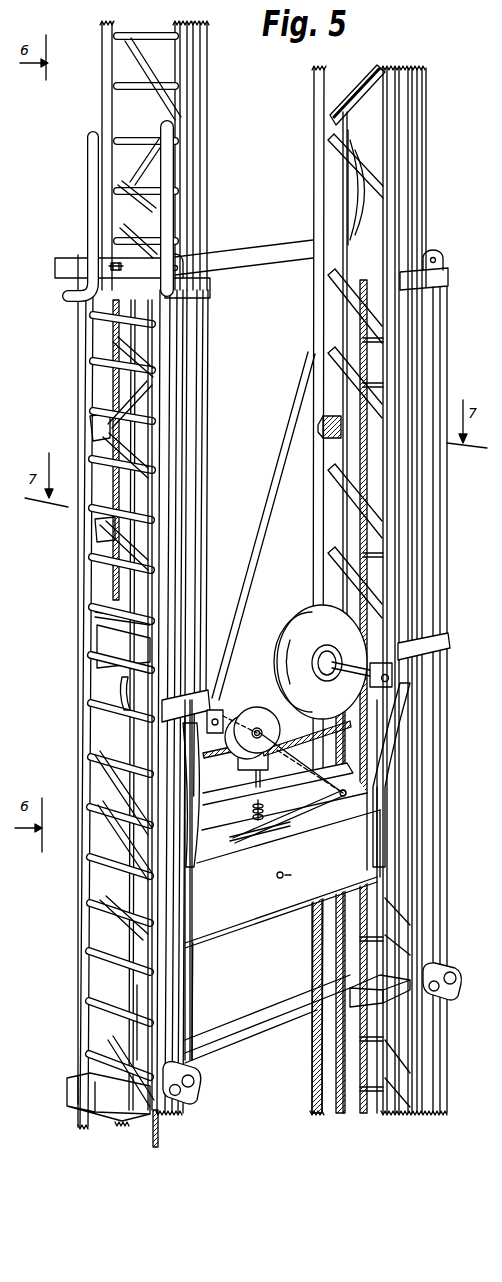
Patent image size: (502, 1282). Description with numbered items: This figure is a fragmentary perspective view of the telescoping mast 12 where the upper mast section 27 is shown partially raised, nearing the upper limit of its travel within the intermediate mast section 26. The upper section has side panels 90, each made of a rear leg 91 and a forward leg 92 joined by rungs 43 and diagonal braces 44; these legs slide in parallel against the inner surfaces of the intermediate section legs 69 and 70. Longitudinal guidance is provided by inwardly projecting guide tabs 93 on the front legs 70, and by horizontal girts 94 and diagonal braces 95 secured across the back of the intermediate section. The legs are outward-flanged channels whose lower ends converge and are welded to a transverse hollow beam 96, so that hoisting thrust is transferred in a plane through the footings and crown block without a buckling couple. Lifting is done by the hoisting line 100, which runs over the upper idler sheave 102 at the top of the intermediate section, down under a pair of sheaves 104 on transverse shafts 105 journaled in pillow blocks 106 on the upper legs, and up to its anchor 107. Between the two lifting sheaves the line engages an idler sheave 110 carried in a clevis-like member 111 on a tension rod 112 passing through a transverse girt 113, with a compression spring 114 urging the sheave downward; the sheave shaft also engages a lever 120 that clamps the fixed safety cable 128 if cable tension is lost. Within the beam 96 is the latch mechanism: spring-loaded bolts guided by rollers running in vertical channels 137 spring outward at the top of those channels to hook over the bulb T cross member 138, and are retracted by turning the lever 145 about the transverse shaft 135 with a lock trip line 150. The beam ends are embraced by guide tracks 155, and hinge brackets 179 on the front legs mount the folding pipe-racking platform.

The mast assembly 12 is at (309, 220).
The intermediate mast section 26 is at (450, 338).
The upper mast section 27 is at (430, 115).
The rungs 43 is at (140, 32).
The diagonal braces 44 is at (150, 62).
The rear leg of intermediate section 69 is at (80, 349).
The front leg of intermediate section 70 is at (170, 410).
The side panel 90 is at (100, 90).
The rear leg 91 is at (105, 54).
The forward leg 92 is at (193, 92).
The guide tabs 93 is at (205, 288).
The horizontal girts 94 is at (215, 256).
The diagonal braces 95 is at (275, 480).
The transverse hollow beam 96 is at (215, 925).
The hoisting line 100 is at (115, 380).
The upper idler sheave 102 is at (350, 198).
The sheaves 104 is at (316, 622).
The transverse shafts 105 is at (343, 676).
The pillow blocks 106 is at (370, 663).
The anchor 107 is at (110, 265).
The idler sheave 110 is at (255, 716).
The clevis-like member 111 is at (244, 768).
The tension rod 112 is at (252, 818).
The transverse girt 113 is at (280, 784).
The compression spring 114 is at (272, 817).
The lever 120 is at (290, 682).
The safety cable 128 is at (325, 425).
The transverse shaft 135 is at (299, 876).
The vertical channels 137 is at (137, 1037).
The bulb T cross member 138 is at (108, 640).
The lever 145 is at (320, 810).
The lock trip line 150 is at (338, 790).
The guide tracks 155 is at (100, 615).
The hinge brackets 179 is at (200, 1082).